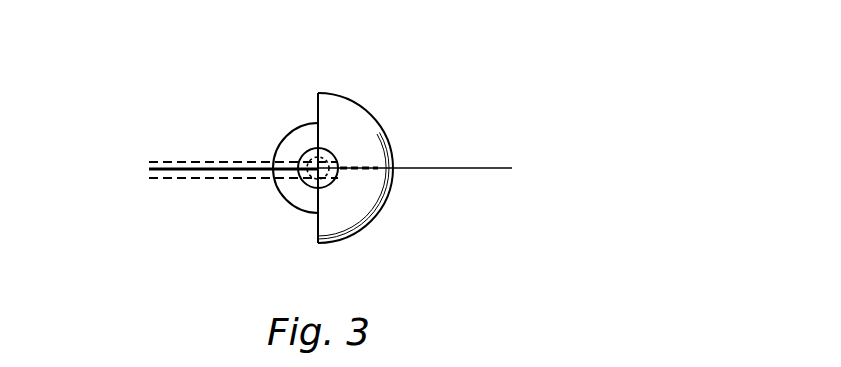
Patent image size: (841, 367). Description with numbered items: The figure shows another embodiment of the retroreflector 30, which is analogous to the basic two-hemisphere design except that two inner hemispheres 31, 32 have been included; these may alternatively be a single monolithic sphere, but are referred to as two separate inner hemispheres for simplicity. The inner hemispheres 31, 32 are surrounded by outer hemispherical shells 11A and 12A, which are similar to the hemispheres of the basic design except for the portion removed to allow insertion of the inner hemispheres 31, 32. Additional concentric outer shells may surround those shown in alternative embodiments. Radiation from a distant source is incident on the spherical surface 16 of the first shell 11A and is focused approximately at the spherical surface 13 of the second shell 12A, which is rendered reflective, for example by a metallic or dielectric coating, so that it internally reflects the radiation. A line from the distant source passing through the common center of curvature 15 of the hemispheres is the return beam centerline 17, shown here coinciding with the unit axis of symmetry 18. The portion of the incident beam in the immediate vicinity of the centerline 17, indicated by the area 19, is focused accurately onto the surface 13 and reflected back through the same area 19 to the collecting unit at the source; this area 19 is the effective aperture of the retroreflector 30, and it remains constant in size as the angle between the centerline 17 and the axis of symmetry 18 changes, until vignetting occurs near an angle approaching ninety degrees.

The retroreflector 30 is at (180, 75).
The spherical surface 13 is at (388, 138).
The outer hemispherical shell 12A is at (342, 214).
The spherical surface 16 is at (282, 138).
The outer hemispherical shell 11A is at (294, 201).
The inner hemisphere 31 is at (308, 148).
The inner hemisphere 32 is at (332, 152).
The common center of curvature 15 is at (323, 172).
The return beam centerline 17 is at (515, 174).
The unit axis of symmetry 18 is at (453, 197).
The effective aperture 19 is at (175, 122).